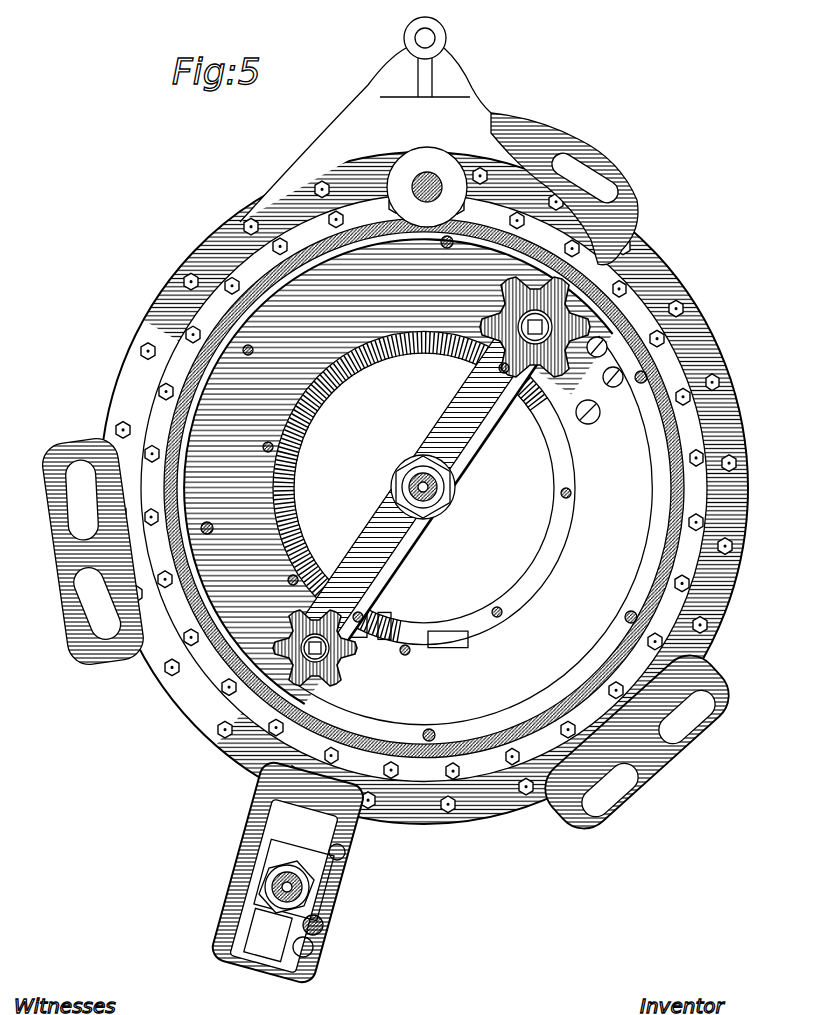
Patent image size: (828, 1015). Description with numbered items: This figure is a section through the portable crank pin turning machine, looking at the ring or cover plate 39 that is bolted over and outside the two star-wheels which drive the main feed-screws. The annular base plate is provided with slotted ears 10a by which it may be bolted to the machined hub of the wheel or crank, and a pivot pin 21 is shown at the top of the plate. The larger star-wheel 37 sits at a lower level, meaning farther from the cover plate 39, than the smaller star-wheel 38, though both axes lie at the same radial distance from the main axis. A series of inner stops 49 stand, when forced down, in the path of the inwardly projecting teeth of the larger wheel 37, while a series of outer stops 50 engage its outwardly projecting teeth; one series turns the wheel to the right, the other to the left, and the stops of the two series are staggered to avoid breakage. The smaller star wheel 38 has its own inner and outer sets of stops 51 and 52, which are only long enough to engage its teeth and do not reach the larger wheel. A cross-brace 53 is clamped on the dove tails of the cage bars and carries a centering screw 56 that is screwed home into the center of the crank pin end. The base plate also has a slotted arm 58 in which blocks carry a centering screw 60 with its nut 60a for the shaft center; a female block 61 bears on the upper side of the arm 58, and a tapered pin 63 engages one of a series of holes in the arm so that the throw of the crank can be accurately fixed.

The slotted ears 10a is at (556, 126).
The pivot pin 21 is at (432, 182).
The star-wheel 37 is at (557, 318).
The star-wheel 38 is at (303, 660).
The ring or cover plate 39 is at (488, 747).
The stops 49 is at (572, 585).
The stops 50 is at (452, 244).
The inner set of stops 51 is at (210, 526).
The outer set of stops 52 is at (308, 556).
The cross-brace 53 is at (468, 438).
The centering screw 56 is at (445, 512).
The arm 58 is at (270, 808).
The centering screw 60 is at (312, 893).
The nut 60a is at (265, 878).
The female block 61 is at (255, 905).
The tapered pin 63 is at (324, 932).